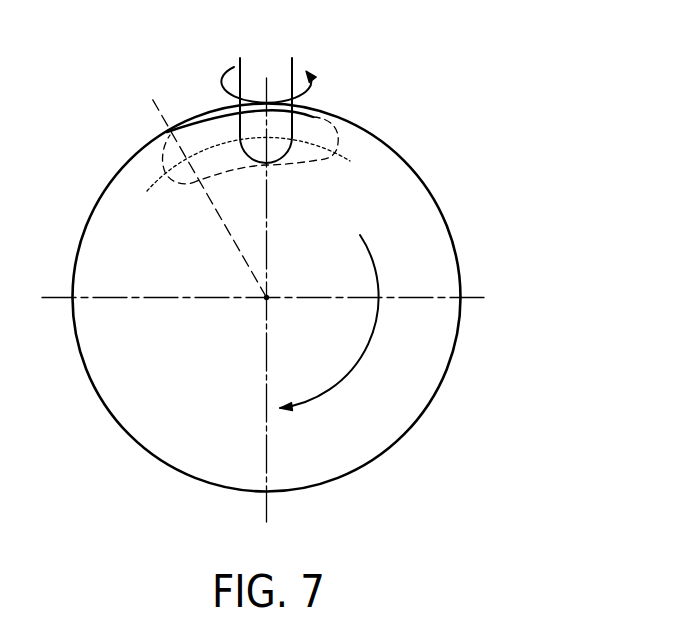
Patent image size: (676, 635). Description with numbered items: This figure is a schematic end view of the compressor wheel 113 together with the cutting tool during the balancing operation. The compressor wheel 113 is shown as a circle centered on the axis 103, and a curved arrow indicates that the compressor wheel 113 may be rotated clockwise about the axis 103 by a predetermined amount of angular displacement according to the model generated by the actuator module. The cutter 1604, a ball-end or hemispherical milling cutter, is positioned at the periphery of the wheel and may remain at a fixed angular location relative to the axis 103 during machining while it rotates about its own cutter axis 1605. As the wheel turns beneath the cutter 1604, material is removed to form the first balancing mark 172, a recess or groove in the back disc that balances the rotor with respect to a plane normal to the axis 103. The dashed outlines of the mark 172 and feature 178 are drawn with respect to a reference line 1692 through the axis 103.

The compressor wheel 113 is at (425, 160).
The axis 103 is at (268, 297).
The reference line 1692 is at (481, 297).
The cutter 1604 is at (290, 122).
The cutter axis 1605 is at (267, 80).
The first balancing mark 172 is at (230, 167).
The recess 178 is at (157, 178).